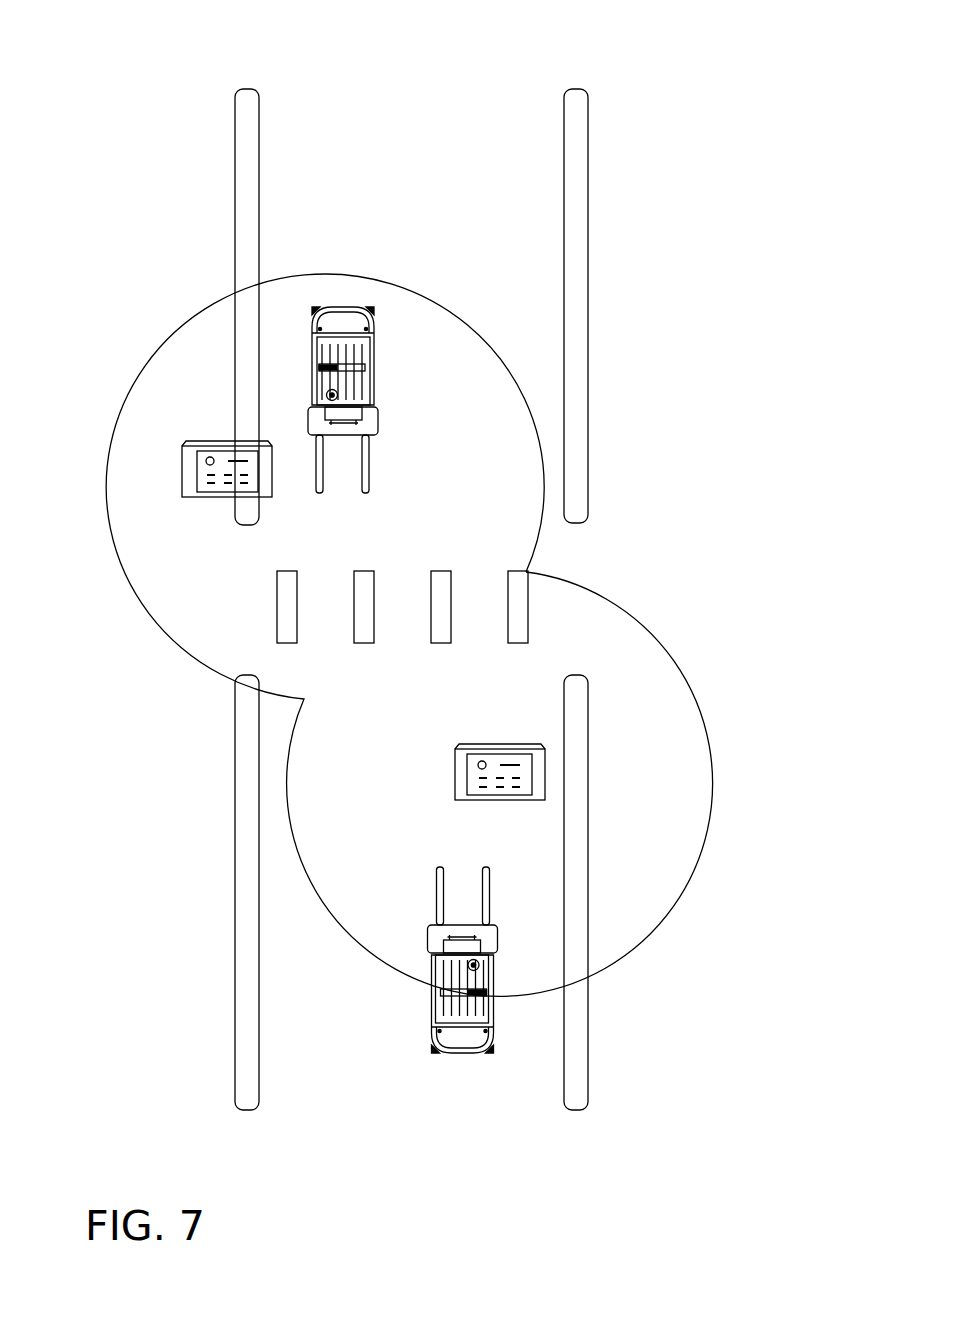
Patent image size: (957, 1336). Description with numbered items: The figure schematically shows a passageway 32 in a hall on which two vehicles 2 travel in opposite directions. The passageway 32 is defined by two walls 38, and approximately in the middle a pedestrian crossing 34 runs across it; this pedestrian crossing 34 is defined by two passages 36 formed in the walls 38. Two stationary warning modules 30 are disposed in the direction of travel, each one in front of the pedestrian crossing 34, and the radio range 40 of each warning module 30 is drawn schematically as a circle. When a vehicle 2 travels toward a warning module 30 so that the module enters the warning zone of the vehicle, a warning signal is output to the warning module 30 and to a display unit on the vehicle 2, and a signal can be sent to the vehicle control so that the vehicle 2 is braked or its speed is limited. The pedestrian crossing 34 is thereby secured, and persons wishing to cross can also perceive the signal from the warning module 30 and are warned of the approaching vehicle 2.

The vehicle 2 is at (345, 306).
The stationary warning module 30 is at (179, 468).
The passageway 32 is at (493, 100).
The pedestrian crossing 34 is at (246, 707).
The passage 36 is at (268, 604).
The wall 38 is at (228, 348).
The radio range 40 is at (181, 323).